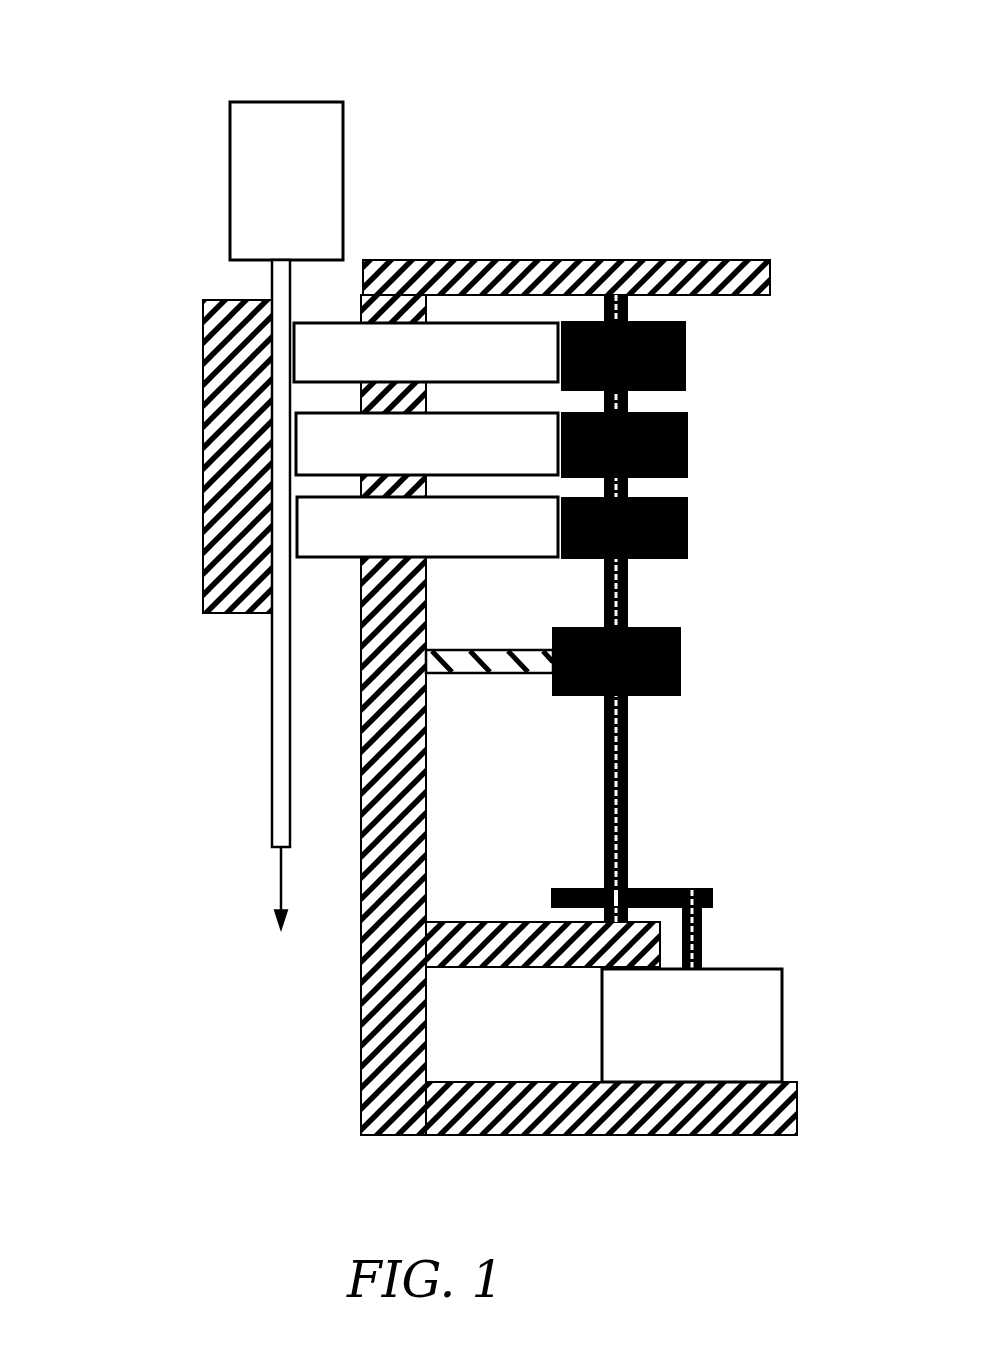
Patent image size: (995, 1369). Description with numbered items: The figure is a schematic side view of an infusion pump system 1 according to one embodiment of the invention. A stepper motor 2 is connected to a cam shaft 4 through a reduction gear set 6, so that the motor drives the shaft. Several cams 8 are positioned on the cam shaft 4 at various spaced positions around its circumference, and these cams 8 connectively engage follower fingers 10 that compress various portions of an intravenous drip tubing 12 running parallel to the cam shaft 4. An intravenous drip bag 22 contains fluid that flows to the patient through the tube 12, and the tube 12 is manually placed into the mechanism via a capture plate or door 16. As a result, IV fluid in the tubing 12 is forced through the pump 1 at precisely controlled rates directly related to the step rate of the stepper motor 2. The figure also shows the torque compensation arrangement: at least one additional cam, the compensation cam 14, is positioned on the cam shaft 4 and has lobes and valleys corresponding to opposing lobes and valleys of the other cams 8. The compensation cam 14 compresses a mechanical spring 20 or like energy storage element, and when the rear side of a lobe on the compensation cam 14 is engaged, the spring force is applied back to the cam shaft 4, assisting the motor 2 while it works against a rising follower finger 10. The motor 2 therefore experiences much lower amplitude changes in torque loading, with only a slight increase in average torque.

The infusion pump system 1 is at (720, 116).
The stepper motor 2 is at (798, 974).
The cam shaft 4 is at (641, 786).
The reduction gear set 6 is at (698, 847).
The cams 8 is at (701, 440).
The follower fingers 10 is at (316, 574).
The intravenous drip tubing 12 is at (259, 288).
The compensation cam 14 is at (698, 662).
The capture plate or door 16 is at (190, 460).
The mechanical spring 20 is at (487, 688).
The intravenous drip bag 22 is at (361, 147).